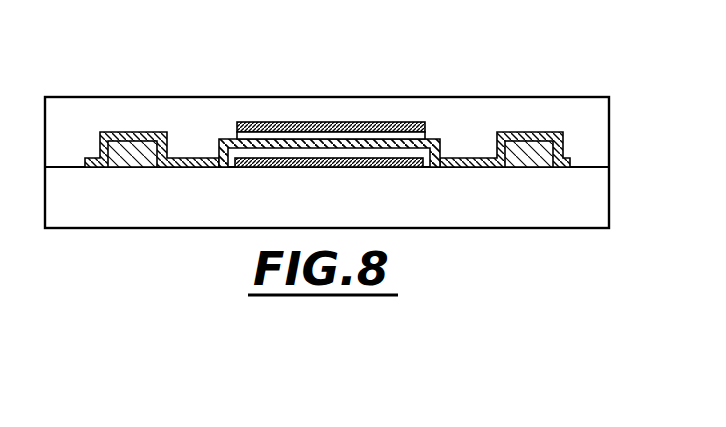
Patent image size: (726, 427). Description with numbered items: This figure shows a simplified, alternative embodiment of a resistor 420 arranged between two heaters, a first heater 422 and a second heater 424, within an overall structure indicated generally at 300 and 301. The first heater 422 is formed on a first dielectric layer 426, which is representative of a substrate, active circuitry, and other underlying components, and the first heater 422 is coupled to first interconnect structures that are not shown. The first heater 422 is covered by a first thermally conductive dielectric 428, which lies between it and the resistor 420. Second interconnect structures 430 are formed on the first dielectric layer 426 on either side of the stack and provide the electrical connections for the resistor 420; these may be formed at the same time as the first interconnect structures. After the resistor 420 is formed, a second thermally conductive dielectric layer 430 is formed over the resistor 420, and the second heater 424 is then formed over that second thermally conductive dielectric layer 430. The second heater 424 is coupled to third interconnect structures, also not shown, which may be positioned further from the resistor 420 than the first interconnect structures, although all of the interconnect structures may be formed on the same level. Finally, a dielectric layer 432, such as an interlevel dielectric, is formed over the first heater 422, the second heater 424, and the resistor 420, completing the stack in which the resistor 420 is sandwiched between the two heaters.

The semiconductor package 300 is at (591, 71).
The substrate structure 301 is at (631, 243).
The resistor 420 is at (117, 137).
The first heater 422 is at (277, 165).
The second heater 424 is at (353, 128).
The first dielectric layer 426 is at (597, 197).
The first thermally conductive dielectric 428 is at (429, 152).
The second interconnect structures 430 is at (135, 150).
The dielectric layer 432 is at (597, 125).